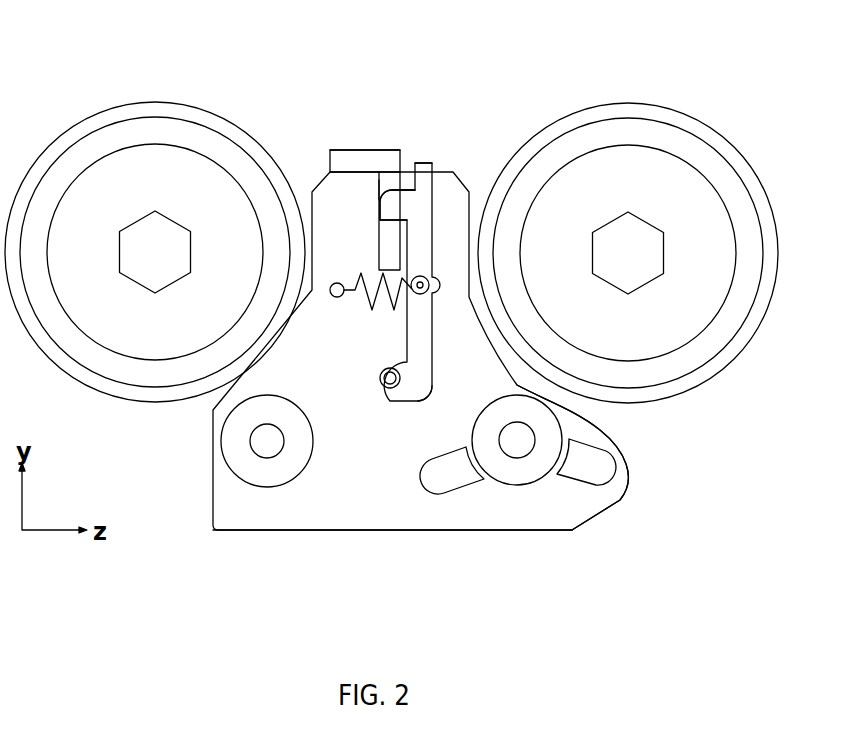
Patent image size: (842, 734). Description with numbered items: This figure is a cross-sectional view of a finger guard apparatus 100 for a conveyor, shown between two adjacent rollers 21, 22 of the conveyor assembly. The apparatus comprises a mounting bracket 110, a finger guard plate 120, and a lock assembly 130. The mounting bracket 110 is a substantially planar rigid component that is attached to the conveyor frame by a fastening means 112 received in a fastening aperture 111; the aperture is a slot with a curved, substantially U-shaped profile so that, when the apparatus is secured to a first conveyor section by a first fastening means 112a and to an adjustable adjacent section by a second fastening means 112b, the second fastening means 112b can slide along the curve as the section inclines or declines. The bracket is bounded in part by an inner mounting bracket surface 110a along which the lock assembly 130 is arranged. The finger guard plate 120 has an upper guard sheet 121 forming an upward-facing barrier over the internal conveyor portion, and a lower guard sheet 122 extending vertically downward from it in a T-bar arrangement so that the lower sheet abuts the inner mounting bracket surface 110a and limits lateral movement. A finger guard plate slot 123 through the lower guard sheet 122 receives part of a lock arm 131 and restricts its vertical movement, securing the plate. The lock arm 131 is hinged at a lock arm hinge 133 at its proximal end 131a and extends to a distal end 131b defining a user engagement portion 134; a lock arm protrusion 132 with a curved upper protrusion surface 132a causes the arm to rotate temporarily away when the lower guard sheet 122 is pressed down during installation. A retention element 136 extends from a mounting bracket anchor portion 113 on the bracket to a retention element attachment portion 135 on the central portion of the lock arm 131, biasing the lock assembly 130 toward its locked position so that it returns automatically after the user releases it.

The finger guard apparatus 100 is at (444, 72).
The first roller 21 is at (140, 170).
The second roller 22 is at (677, 187).
The mounting bracket 110 is at (418, 536).
The inner mounting bracket surface 110a is at (318, 500).
The fastening aperture 111 is at (593, 480).
The fastening means 112 is at (588, 428).
The first fastening means 112a is at (267, 443).
The second fastening means 112b is at (507, 463).
The mounting bracket anchor portion 113 is at (337, 283).
The finger guard plate 120 is at (340, 144).
The upper guard sheet 121 is at (370, 150).
The lower guard sheet 122 is at (388, 243).
The finger guard plate slot 123 is at (371, 186).
The lock assembly 130 is at (422, 267).
The lock arm 131 is at (436, 335).
The proximal end 131a is at (438, 404).
The distal end 131b is at (418, 170).
The lock arm protrusion 132 is at (404, 203).
The upper protrusion surface 132a is at (394, 189).
The lock arm hinge 133 is at (388, 388).
The user engagement portion 134 is at (461, 135).
The retention element attachment portion 135 is at (441, 277).
The retention element 136 is at (356, 305).